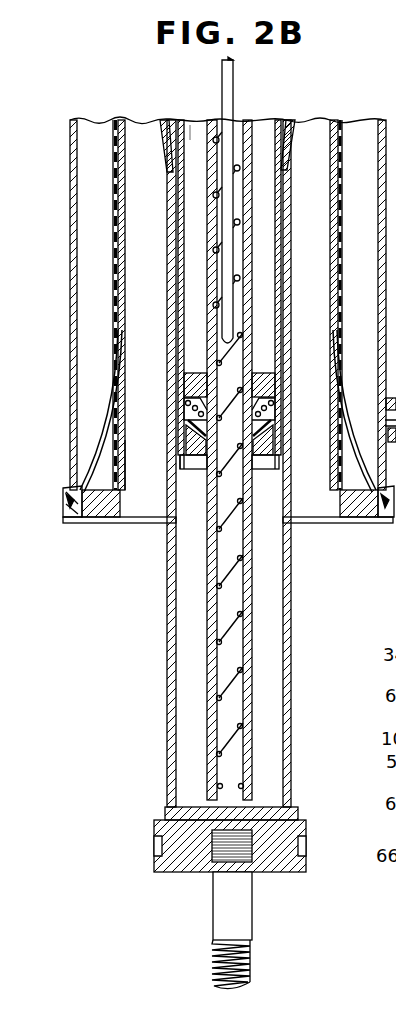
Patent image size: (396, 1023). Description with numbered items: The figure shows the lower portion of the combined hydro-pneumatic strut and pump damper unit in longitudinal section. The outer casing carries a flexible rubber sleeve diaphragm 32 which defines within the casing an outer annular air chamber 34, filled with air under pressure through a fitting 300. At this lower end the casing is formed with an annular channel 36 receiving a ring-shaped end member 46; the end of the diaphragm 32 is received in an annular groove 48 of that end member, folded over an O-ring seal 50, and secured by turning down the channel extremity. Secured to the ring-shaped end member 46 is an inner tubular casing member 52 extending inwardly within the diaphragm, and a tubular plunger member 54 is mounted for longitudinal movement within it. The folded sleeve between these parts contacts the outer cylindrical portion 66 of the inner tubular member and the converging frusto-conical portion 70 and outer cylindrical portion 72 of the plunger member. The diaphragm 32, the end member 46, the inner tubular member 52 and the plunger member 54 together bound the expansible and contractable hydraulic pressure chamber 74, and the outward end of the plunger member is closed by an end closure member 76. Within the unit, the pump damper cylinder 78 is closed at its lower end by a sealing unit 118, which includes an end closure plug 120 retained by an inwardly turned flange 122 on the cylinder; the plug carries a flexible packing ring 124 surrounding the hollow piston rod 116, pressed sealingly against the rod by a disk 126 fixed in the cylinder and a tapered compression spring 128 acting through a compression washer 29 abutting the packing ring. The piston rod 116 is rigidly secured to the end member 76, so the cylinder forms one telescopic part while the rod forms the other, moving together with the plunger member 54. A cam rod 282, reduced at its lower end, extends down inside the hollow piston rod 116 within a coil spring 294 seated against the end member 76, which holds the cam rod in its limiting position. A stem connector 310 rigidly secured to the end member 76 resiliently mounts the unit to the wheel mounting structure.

The cam rod 282 is at (232, 88).
The cylinder 78 is at (196, 135).
The intermediate outwardly converging frusto-conical portion 70 is at (165, 148).
The outer cylindrical portion 66 is at (130, 177).
The outer annular air chamber 34 is at (76, 244).
The sleeve diaphragm 32 is at (342, 231).
The outer cylindrical portion 72 is at (171, 250).
The tubular plunger member 54 is at (293, 598).
The hollow piston rod 116 is at (253, 690).
The coil spring 294 is at (220, 660).
The sealing unit 118 is at (263, 374).
The disk 126 is at (275, 378).
The ball bearings 29 is at (184, 407).
The tapered compression spring 128 is at (277, 404).
The flexible packing ring 124 is at (277, 437).
The inwardly turned flange 122 is at (186, 470).
The end closure or plug 120 is at (286, 455).
The hydraulic pressure chamber 74 is at (88, 468).
The inner tubular casing member 52 is at (126, 448).
The annular channel 36 is at (66, 510).
The O-ring seal 50 is at (68, 515).
The annular groove 48 is at (92, 520).
The ring-shaped end member 46 is at (108, 512).
The fitting 300 is at (392, 400).
The end casting or closure member 76 is at (300, 815).
The stem connector 310 is at (242, 920).